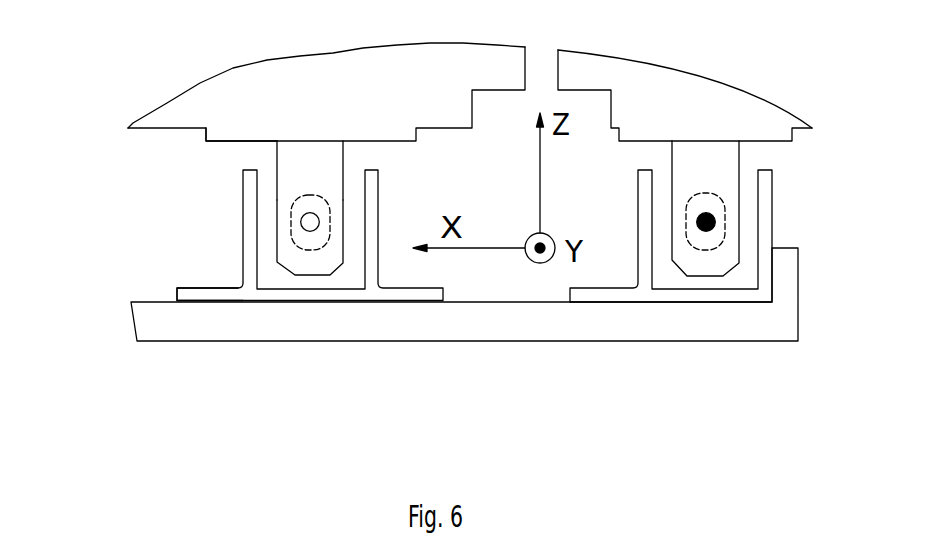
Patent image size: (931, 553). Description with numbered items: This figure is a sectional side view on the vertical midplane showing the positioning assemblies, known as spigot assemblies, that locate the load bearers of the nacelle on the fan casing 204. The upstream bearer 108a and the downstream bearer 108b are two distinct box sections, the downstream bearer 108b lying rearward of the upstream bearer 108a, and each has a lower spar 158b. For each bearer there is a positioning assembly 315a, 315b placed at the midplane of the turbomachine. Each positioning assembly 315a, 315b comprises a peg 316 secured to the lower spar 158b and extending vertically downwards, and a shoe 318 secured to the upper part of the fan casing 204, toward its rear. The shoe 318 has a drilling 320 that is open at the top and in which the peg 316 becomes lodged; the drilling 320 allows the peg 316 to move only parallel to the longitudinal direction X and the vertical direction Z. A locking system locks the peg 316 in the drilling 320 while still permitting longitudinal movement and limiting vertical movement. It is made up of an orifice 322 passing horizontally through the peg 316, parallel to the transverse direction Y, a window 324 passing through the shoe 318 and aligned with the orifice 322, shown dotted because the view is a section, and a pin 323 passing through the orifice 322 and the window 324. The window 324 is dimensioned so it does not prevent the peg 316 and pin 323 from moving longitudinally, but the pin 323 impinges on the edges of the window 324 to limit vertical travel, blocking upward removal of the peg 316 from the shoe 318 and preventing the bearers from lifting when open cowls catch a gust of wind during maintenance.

The upstream bearer 108a is at (349, 109).
The downstream bearer 108b is at (712, 127).
The lower spar 158b is at (238, 143).
The fan casing 204 is at (163, 315).
The positioning assembly 315a is at (190, 233).
The positioning assembly 315b is at (860, 180).
The peg 316 is at (328, 156).
The shoe 318 is at (195, 297).
The drilling 320 is at (352, 268).
The orifice 322 is at (310, 222).
The pin 323 is at (706, 222).
The window 324 is at (310, 193).